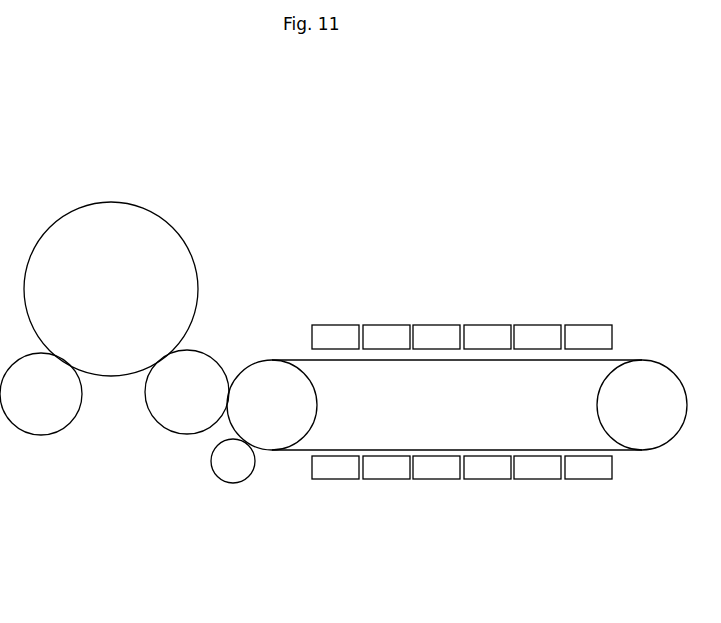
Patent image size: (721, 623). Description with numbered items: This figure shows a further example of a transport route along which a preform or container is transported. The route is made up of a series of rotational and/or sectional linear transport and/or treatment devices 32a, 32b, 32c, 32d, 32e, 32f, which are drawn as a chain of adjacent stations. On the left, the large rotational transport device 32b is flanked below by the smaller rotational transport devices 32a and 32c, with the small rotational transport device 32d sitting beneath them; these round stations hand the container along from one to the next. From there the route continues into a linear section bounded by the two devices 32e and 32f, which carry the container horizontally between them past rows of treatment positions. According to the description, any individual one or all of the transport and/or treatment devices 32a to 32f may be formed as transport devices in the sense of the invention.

The rotational transport device 32a is at (38, 435).
The rotational transport device 32b is at (147, 209).
The rotational transport device 32c is at (213, 353).
The rotational transport device 32d is at (240, 483).
The sectional linear transport device 32e is at (281, 360).
The sectional linear transport device 32f is at (619, 360).